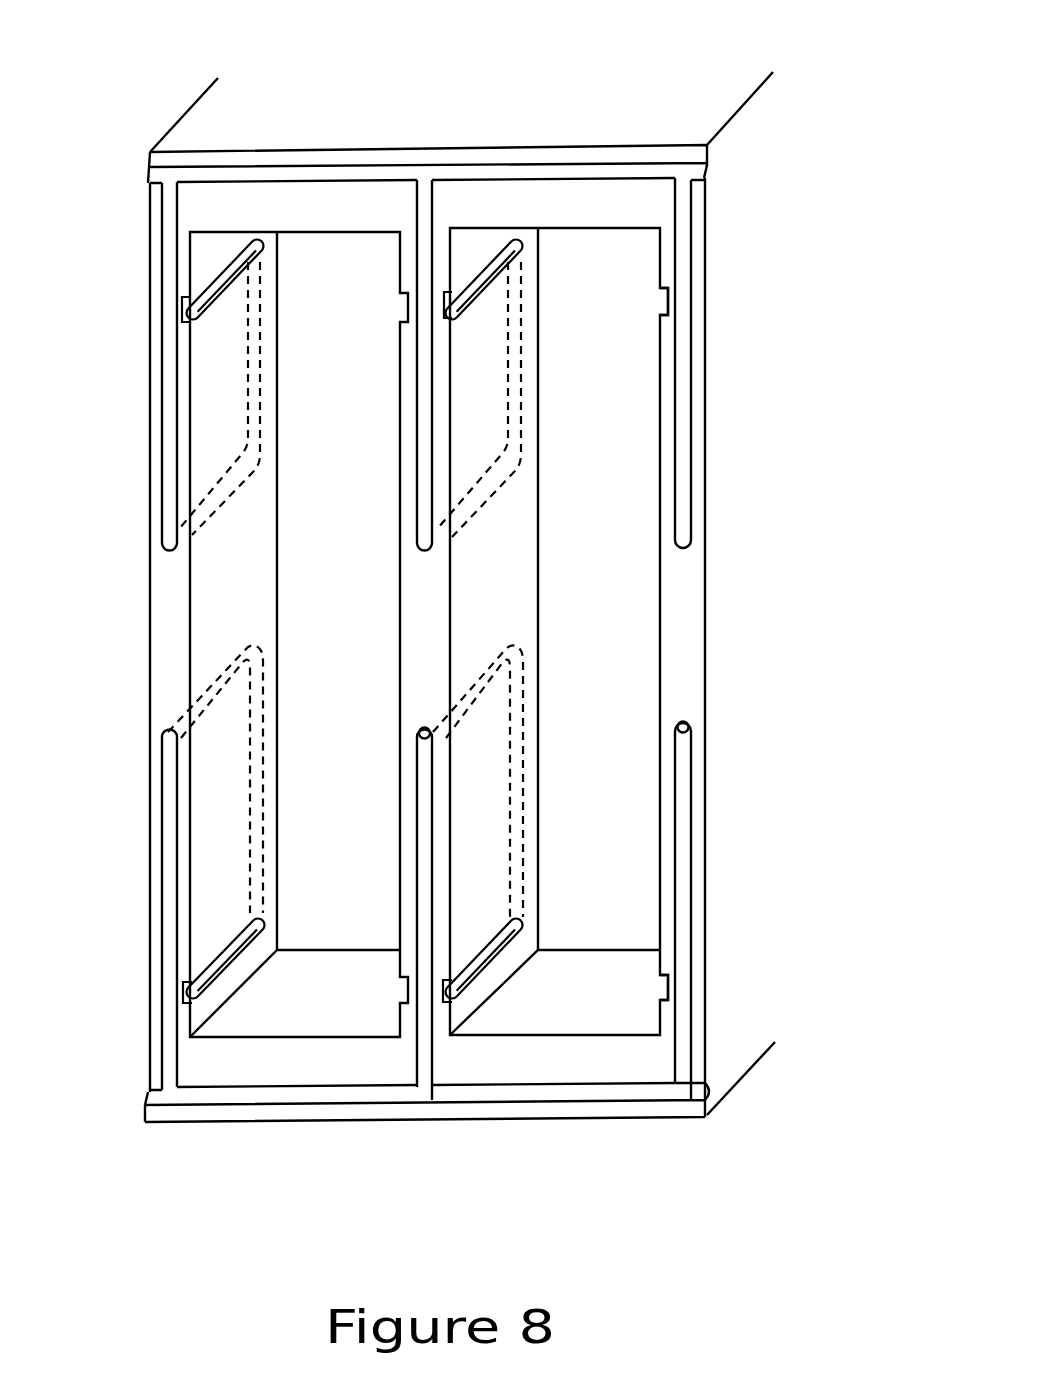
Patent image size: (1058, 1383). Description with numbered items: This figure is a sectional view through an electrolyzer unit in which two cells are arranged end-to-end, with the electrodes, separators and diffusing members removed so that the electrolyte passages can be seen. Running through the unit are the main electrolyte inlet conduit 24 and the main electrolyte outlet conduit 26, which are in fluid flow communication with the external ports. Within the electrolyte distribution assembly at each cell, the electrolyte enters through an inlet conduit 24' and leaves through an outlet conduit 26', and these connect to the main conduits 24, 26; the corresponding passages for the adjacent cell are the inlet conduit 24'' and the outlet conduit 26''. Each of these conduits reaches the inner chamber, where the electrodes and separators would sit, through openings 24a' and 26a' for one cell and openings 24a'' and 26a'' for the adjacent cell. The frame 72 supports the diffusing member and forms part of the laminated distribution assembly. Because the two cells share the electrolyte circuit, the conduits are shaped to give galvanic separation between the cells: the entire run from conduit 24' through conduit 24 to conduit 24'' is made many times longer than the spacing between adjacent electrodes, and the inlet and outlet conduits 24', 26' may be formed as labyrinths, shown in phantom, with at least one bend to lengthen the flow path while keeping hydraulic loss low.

The electrolyte outlet conduit 26 is at (493, 108).
The electrolyte outlet conduit 26' is at (399, 280).
The electrolyte outlet conduit 26'' is at (738, 363).
The opening of electrolyte outlet conduit 26a' is at (364, 166).
The opening of electrolyte outlet conduit 26a'' is at (772, 232).
The frame 72 is at (542, 707).
The electrolyte inlet conduit 24 is at (460, 1139).
The electrolyte inlet conduit 24' is at (348, 872).
The electrolyte inlet conduit 24'' is at (576, 959).
The opening of electrolyte inlet conduit 24a' is at (375, 1077).
The opening of electrolyte inlet conduit 24a'' is at (641, 1103).